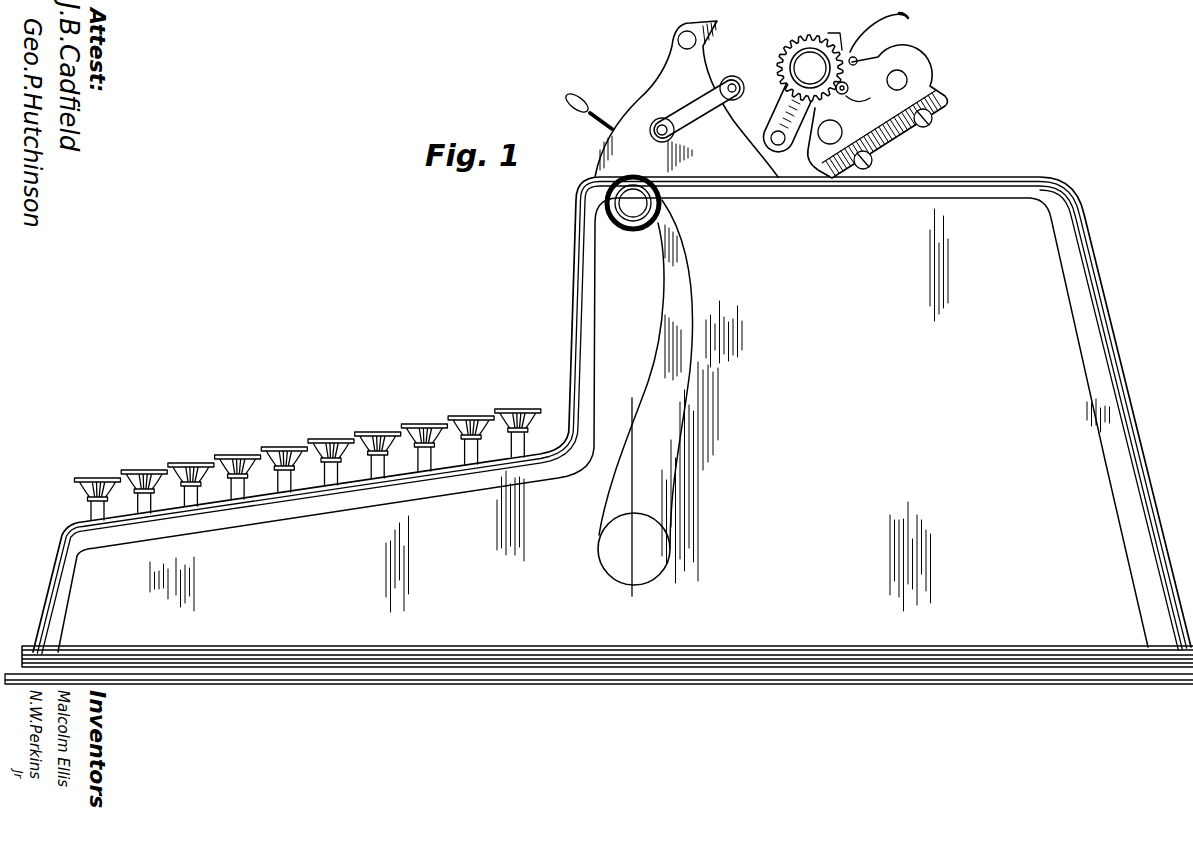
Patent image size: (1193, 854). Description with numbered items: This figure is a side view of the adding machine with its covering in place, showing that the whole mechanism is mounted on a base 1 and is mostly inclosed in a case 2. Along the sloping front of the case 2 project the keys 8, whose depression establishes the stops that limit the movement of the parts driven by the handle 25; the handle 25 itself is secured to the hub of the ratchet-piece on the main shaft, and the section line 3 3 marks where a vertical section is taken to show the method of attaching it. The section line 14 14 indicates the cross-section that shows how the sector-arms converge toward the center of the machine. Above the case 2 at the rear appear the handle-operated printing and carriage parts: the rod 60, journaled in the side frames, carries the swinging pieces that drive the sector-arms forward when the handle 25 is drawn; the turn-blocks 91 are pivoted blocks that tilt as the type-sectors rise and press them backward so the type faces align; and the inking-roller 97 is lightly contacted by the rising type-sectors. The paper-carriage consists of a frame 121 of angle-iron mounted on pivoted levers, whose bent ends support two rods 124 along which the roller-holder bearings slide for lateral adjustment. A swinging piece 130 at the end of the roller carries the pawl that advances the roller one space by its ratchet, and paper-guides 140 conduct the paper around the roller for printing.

The base 1 is at (792, 670).
The case 2 is at (603, 425).
The section line 3 3 is at (634, 397).
The keys 8 is at (289, 441).
The section line 14 14 is at (1048, 176).
The handle 25 is at (648, 388).
The rod 60 is at (670, 99).
The turn-blocks 91 is at (713, 39).
The inking-roller 97 is at (708, 105).
The frame 121 is at (886, 133).
The rods 124 is at (903, 79).
The swinging piece 130 is at (817, 92).
The paper-guides 140 is at (868, 32).